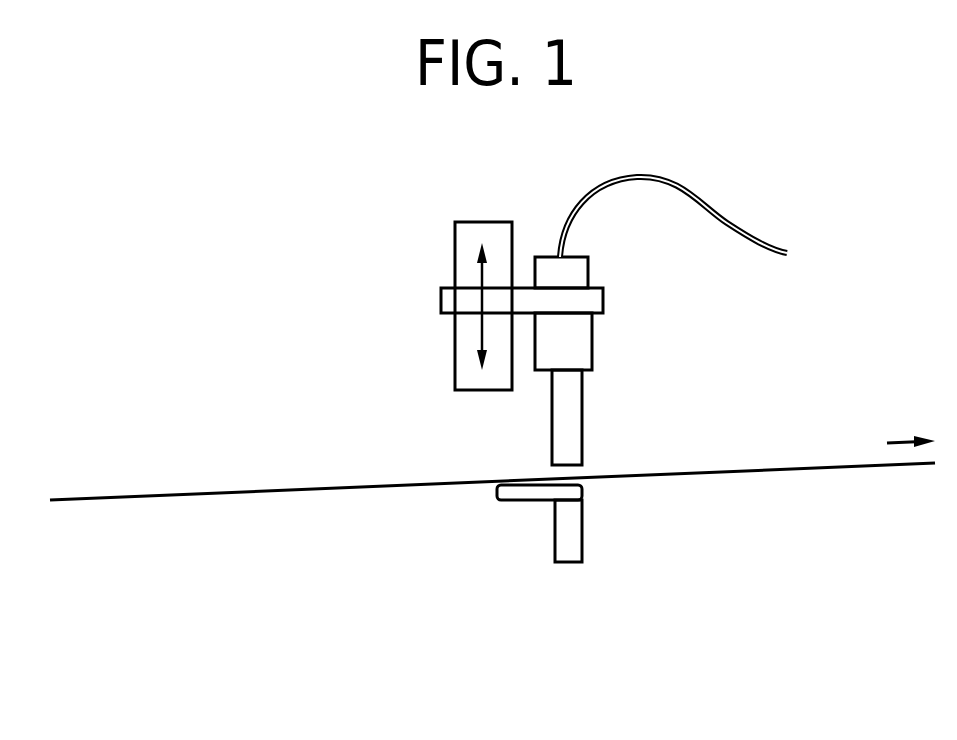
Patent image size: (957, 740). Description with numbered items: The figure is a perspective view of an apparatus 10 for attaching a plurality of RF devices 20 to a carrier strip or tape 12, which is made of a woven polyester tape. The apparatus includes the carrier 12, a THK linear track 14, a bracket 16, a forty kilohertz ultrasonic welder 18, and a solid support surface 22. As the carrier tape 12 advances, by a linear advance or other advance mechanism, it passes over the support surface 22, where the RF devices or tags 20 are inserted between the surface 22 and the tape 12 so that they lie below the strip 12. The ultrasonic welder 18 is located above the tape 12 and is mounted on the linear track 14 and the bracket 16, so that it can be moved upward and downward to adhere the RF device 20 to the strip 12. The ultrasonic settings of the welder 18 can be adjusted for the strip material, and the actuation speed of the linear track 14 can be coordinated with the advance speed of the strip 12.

The apparatus 10 is at (284, 250).
The carrier strip or tape 12 is at (297, 474).
The linear track 14 is at (438, 260).
The bracket 16 is at (441, 305).
The ultrasonic welder 18 is at (593, 348).
The RF devices 20 is at (555, 549).
The solid support surface 22 is at (502, 520).